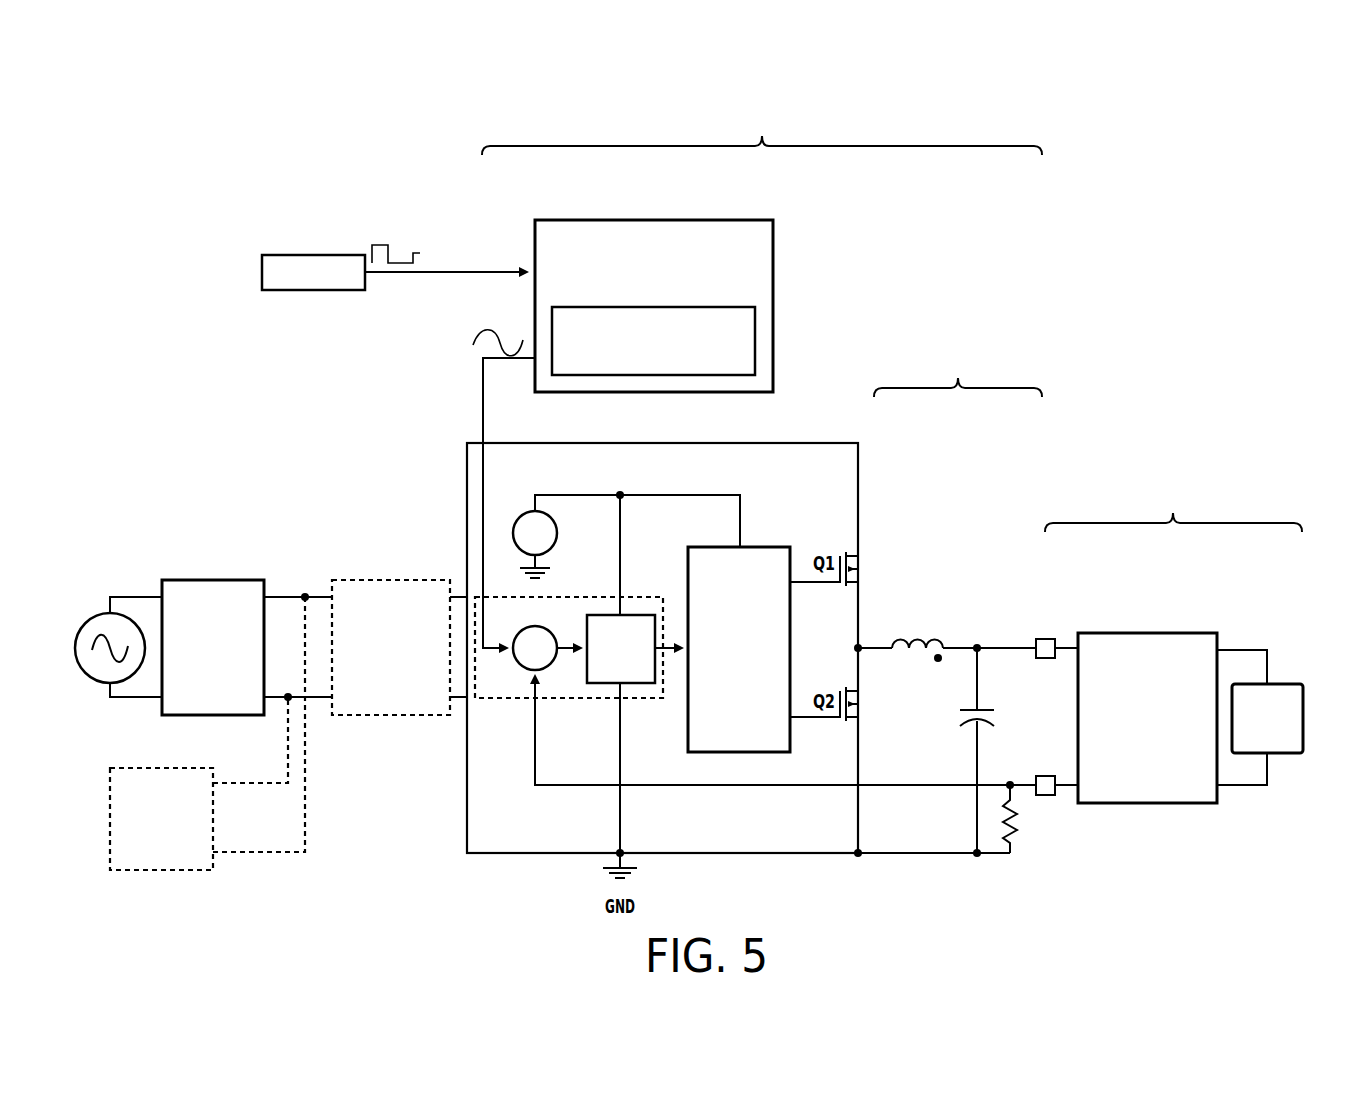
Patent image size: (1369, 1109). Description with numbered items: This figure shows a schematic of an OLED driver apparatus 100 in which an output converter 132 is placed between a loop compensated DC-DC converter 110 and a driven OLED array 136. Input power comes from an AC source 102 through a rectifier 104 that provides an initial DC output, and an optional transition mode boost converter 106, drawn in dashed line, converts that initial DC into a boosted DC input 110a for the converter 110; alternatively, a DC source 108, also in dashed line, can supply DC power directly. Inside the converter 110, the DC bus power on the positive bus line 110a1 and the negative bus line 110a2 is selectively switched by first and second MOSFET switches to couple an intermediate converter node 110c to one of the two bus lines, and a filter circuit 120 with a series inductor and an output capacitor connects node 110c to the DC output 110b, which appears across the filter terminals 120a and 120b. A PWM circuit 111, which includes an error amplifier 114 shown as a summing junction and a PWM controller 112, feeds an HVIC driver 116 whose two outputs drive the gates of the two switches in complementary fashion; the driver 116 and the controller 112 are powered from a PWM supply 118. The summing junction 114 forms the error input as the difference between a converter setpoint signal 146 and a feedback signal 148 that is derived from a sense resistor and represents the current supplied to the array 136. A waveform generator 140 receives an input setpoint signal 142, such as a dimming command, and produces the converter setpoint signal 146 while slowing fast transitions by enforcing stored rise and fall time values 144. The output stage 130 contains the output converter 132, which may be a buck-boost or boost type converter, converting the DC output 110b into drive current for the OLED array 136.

The electronic driver apparatus 100 is at (222, 182).
The AC source 102 is at (90, 624).
The rectifier 104 is at (210, 580).
The transition mode boost converter 106 is at (388, 578).
The DC source 108 is at (158, 766).
The loop compensated PWM controlled DC-DC converter 110 is at (762, 136).
The DC input 110a is at (457, 578).
The first DC input terminal 110a1 is at (550, 443).
The second DC input terminal 110a2 is at (550, 853).
The DC output 110b is at (985, 634).
The intermediate converter node 110c is at (858, 646).
The PWM circuit 111 is at (605, 597).
The PWM controller 112 is at (587, 630).
The error amplifier 114 is at (526, 628).
The driver 116 is at (705, 547).
The PWM supply 118 is at (558, 533).
The filter circuit 120 is at (958, 378).
The filter output terminal 120a is at (1045, 639).
The filter return terminal 120b is at (1045, 776).
The output stage 130 is at (1173, 513).
The output converter 132 is at (1145, 633).
The OLED array 136 is at (1285, 684).
The waveform generator 140 is at (602, 220).
The input setpoint signal 142 is at (313, 255).
The setpoint rise time and fall time values 144 is at (552, 322).
The converter setpoint signal 146 is at (483, 390).
The feedback signal 148 is at (535, 718).